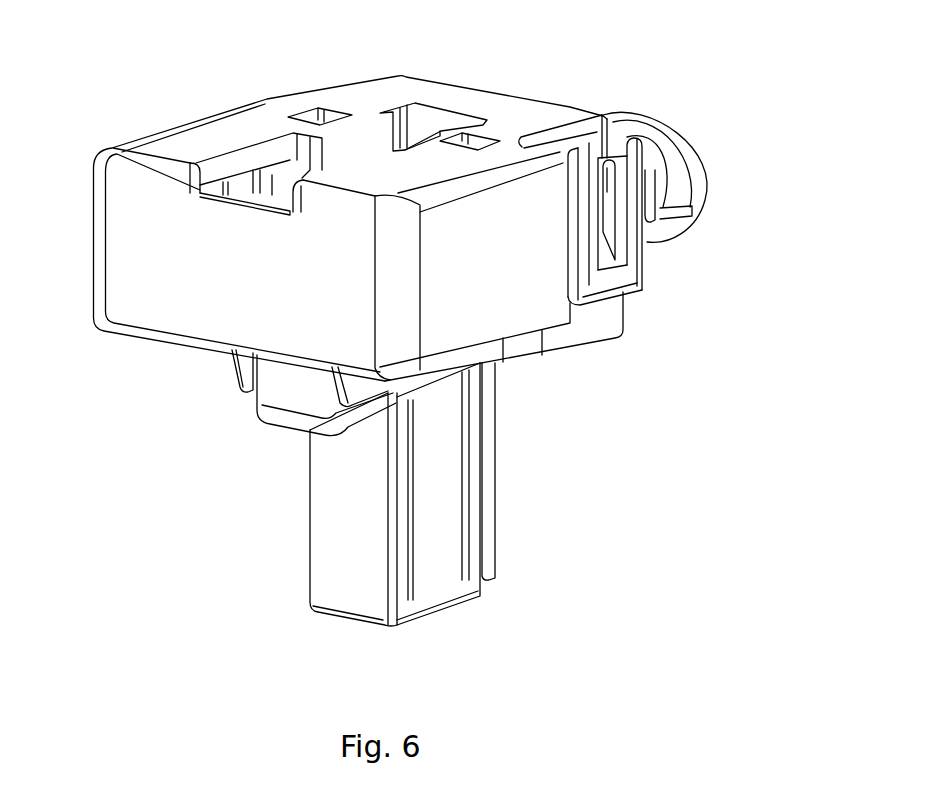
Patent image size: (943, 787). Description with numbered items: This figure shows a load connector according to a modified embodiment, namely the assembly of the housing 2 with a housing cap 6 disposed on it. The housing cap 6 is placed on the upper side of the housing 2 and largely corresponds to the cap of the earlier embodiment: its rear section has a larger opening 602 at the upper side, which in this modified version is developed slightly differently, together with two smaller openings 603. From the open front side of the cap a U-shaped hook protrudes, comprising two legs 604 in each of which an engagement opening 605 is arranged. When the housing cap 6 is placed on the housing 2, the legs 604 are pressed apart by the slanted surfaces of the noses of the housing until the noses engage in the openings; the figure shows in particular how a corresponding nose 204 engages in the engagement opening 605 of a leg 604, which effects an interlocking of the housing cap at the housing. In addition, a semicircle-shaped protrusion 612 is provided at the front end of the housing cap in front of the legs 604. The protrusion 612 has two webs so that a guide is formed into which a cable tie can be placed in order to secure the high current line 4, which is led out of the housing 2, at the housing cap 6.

The housing 2 is at (500, 468).
The high current line 4 is at (707, 176).
The housing cap 6 is at (174, 325).
The nose 204 is at (617, 260).
The larger opening 602 is at (307, 148).
The smaller openings 603 is at (327, 112).
The leg 604 is at (643, 257).
The engagement opening 605 is at (606, 168).
The semicircle-shaped protrusion 612 is at (672, 137).